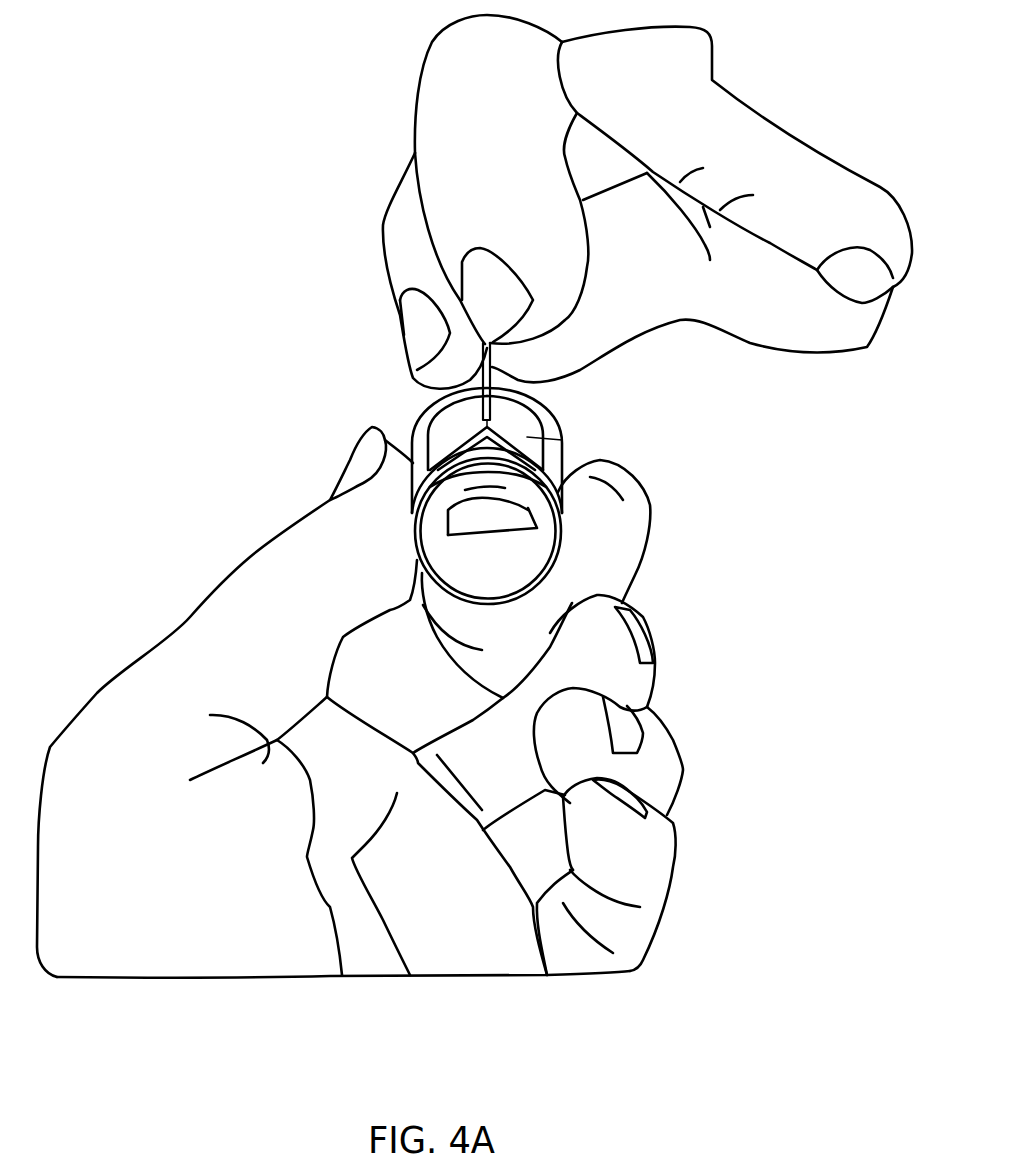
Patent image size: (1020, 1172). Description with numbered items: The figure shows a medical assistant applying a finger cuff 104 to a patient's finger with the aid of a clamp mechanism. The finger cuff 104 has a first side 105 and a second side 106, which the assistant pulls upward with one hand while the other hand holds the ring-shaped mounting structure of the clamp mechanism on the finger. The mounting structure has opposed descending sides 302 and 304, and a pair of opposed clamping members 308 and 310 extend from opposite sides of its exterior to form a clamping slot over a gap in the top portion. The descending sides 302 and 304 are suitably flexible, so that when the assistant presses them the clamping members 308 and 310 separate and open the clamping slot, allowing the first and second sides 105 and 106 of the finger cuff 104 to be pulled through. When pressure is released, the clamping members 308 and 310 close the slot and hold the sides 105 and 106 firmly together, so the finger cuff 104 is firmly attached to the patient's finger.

The finger cuff 104 is at (492, 368).
The first side of the finger cuff 105 is at (482, 399).
The second side of the finger cuff 106 is at (495, 394).
The descending side 302 is at (560, 497).
The descending side 304 is at (412, 447).
The clamping member 308 is at (562, 440).
The clamping member 310 is at (432, 433).